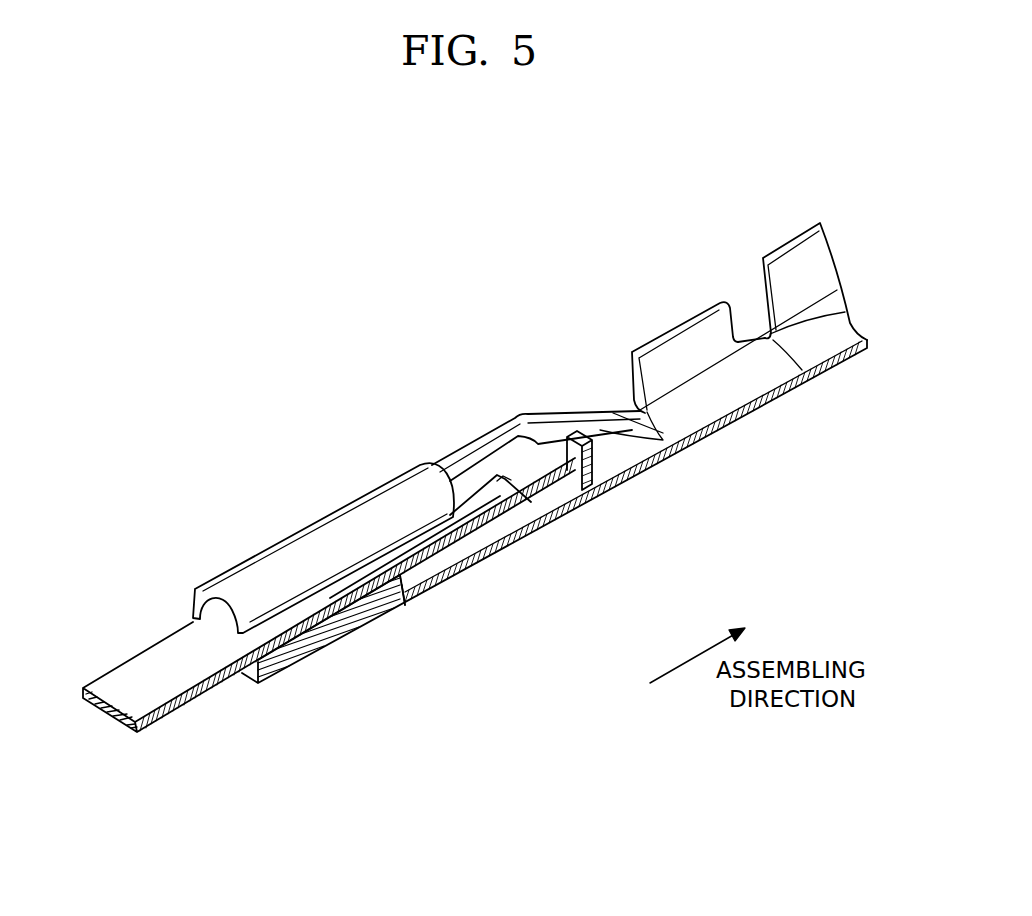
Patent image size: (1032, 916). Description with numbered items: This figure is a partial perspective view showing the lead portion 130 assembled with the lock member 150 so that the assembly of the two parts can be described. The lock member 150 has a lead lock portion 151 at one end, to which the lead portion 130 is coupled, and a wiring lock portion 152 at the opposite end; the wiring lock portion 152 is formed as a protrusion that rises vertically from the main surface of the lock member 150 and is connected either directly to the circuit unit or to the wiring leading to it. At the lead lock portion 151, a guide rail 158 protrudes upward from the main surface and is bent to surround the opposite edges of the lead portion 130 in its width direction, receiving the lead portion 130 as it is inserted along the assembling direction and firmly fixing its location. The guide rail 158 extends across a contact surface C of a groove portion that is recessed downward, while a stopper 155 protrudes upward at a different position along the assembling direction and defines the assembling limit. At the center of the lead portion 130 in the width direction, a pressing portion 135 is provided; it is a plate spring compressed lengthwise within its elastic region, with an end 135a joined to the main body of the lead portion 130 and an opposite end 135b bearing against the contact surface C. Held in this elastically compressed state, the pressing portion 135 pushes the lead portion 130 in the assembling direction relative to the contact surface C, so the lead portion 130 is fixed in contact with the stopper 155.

The lead portion 130 is at (182, 706).
The pressing portion 135 is at (485, 515).
The end 135a is at (527, 503).
The opposite end 135b is at (427, 585).
The lock member 150 is at (554, 398).
The lead lock portion 151 is at (299, 528).
The wiring lock portion 152 is at (747, 222).
The stopper 155 is at (590, 468).
The guide rail 158 is at (323, 537).
The contact surface C is at (397, 580).